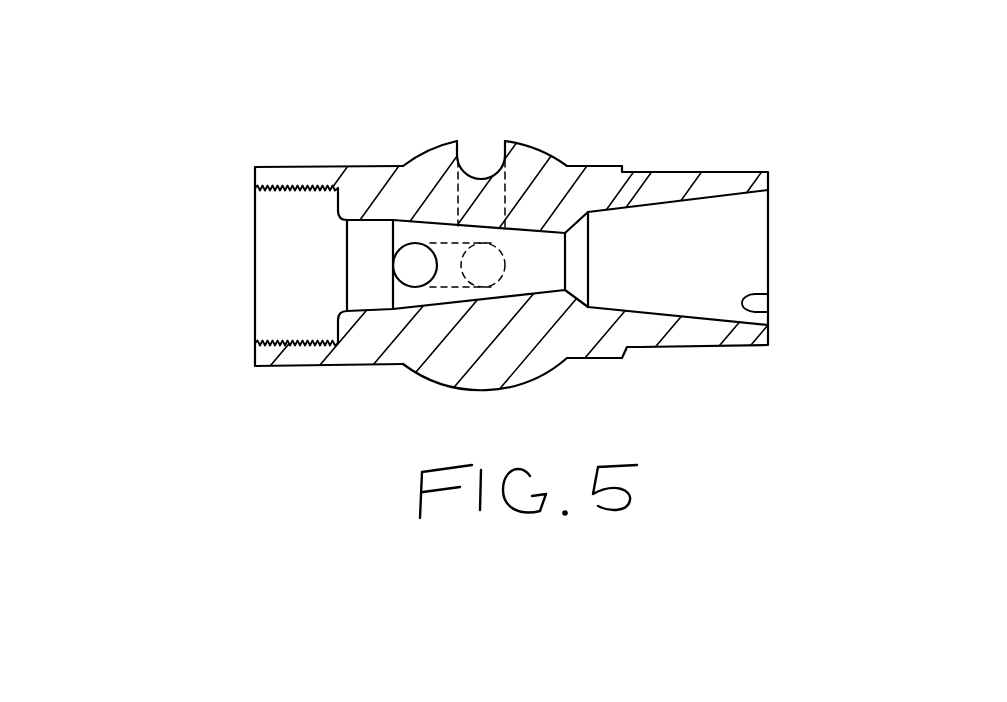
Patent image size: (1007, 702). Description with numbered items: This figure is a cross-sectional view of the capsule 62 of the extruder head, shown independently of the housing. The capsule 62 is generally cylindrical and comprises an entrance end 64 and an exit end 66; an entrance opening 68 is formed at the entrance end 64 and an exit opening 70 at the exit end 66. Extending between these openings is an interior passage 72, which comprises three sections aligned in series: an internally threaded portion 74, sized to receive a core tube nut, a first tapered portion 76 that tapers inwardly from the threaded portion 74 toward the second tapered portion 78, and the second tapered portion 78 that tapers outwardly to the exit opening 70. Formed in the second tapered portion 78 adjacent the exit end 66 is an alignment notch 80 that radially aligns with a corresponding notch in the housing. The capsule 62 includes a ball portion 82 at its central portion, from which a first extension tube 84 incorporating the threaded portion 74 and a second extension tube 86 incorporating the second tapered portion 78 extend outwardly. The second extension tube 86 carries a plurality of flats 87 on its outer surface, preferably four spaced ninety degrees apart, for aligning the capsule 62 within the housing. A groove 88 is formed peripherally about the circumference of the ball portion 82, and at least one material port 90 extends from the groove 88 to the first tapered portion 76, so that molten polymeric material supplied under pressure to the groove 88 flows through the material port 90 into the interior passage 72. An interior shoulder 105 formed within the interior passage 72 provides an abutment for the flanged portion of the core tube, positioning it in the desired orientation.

The capsule 62 is at (662, 42).
The entrance end 64 is at (182, 205).
The exit end 66 is at (869, 328).
The entrance opening 68 is at (101, 281).
The exit opening 70 is at (802, 213).
The interior passage 72 is at (277, 308).
The internally threaded portion 74 is at (277, 343).
The first tapered portion 76 is at (518, 290).
The second tapered portion 78 is at (670, 208).
The alignment notch 80 is at (762, 300).
The ball portion 82 is at (503, 389).
The first extension tube 84 is at (322, 167).
The second extension tube 86 is at (697, 346).
The flats 87 is at (648, 171).
The groove 88 is at (488, 128).
The material port 90 is at (442, 288).
The interior shoulder 105 is at (337, 207).